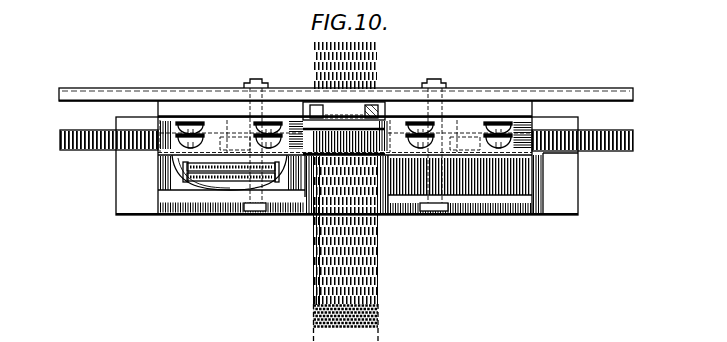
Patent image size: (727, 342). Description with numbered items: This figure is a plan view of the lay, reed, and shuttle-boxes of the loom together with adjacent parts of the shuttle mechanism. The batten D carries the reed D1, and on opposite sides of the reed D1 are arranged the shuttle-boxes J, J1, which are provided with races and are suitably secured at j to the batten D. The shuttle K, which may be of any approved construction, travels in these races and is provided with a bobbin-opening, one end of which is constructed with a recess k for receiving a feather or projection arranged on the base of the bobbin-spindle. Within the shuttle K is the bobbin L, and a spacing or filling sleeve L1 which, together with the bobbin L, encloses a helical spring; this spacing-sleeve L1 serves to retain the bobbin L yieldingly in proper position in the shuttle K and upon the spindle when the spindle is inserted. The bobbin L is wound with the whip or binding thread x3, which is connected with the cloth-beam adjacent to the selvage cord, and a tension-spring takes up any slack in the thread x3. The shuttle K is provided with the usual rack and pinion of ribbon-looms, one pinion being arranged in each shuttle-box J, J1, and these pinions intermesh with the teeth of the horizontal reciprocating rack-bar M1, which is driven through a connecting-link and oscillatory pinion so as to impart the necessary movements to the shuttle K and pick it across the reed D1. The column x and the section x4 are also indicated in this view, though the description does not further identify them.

The batten D is at (63, 94).
The horizontal reciprocating rack-bar M1 is at (62, 141).
The securing point of shuttle-boxes j is at (277, 122).
The reed D1 is at (331, 156).
The vertical shaft / column x is at (358, 247).
The whip or binding thread x3 is at (313, 304).
The column section x4 is at (336, 281).
The recess k is at (190, 176).
The shuttle K is at (201, 184).
The bobbin L is at (203, 186).
The spacing or filling sleeve L1 is at (261, 182).
The shuttle-box J is at (183, 198).
The shuttle-box J1 is at (498, 196).